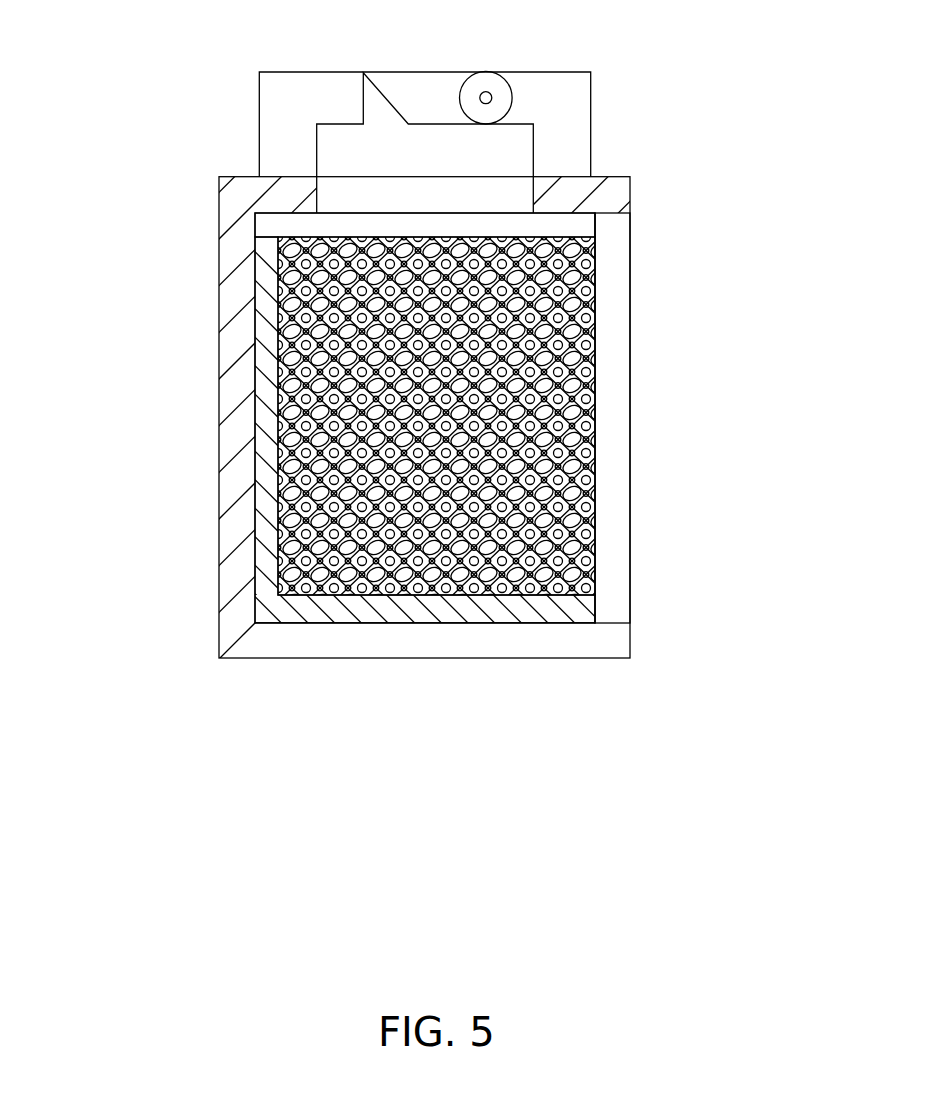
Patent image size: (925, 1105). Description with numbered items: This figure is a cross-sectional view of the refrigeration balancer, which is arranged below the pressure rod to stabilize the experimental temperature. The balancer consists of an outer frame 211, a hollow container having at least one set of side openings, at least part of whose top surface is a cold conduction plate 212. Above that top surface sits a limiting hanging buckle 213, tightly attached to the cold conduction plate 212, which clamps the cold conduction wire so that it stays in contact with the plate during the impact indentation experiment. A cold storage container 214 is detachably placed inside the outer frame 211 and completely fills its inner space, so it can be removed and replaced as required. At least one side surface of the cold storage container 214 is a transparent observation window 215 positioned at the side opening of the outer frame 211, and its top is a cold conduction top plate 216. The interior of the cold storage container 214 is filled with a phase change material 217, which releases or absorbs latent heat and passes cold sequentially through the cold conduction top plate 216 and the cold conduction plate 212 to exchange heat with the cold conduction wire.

The outer frame 211 is at (232, 256).
The cold conduction plate 212 is at (499, 192).
The limiting hanging buckle 213 is at (278, 127).
The cold storage container 214 is at (562, 608).
The observation window 215 is at (608, 482).
The cold conduction top plate 216 is at (577, 226).
The phase change material 217 is at (595, 327).